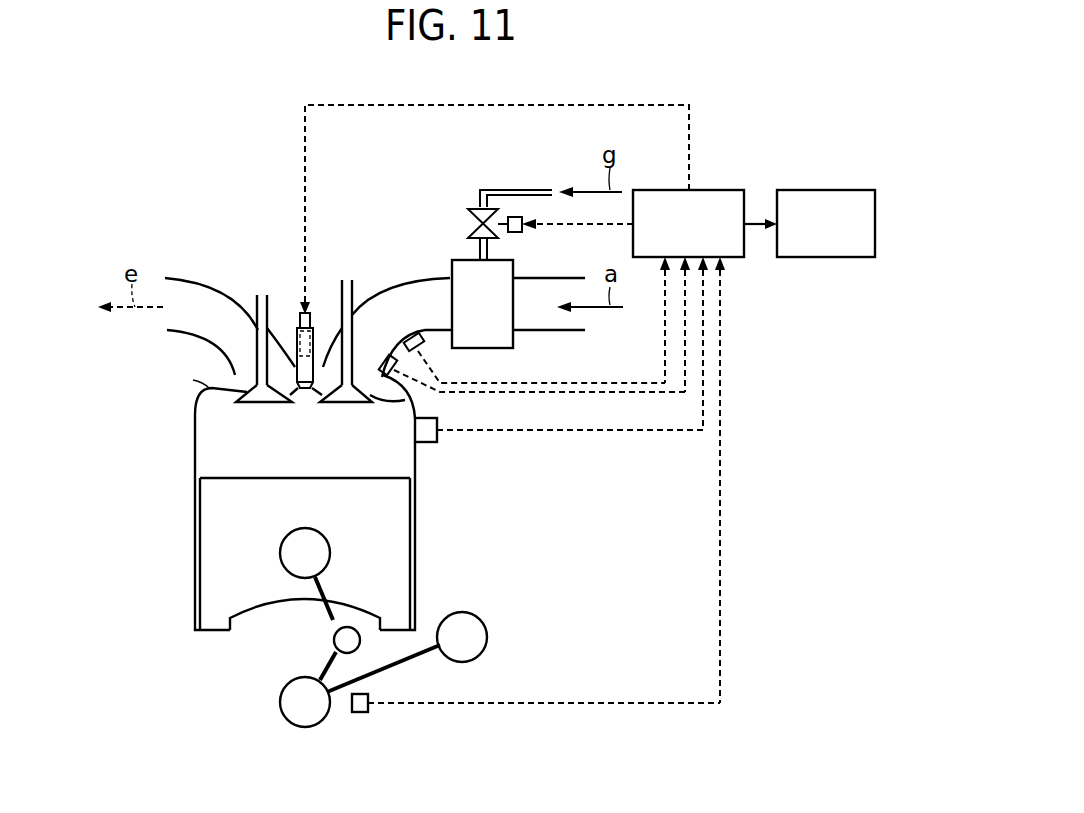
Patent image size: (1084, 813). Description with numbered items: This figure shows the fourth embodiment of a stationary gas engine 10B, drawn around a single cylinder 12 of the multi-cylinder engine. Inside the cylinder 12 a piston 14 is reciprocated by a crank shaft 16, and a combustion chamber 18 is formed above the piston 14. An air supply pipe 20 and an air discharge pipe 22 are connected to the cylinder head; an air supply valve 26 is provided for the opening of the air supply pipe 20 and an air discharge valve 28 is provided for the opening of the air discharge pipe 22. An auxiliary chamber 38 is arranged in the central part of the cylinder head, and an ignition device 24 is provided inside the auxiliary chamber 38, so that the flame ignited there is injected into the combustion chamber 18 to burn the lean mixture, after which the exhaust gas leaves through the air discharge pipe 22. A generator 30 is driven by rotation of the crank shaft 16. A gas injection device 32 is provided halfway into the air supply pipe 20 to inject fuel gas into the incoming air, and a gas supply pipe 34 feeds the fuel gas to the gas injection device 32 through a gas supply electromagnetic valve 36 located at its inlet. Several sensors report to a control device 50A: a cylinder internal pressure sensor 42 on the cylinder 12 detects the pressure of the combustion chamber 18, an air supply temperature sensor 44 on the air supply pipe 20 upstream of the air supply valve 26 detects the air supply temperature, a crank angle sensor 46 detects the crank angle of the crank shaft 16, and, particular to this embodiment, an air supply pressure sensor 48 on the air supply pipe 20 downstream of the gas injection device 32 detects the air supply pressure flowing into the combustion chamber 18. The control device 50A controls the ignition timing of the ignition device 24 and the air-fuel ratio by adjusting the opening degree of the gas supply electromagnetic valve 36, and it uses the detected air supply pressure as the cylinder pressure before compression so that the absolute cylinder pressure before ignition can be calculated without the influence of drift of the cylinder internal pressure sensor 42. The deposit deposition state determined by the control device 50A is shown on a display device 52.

The stationary gas engine 10B is at (655, 86).
The cylinder 12 is at (462, 513).
The piston 14 is at (210, 602).
The crank shaft 16 is at (308, 712).
The combustion chamber 18 is at (237, 438).
The air supply pipe 20 is at (549, 277).
The air discharge pipe 22 is at (181, 278).
The ignition device 24 is at (297, 334).
The air supply valve 26 is at (380, 403).
The air discharge valve 28 is at (187, 374).
The generator 30 is at (488, 634).
The gas injection device 32 is at (482, 334).
The gas supply pipe 34 is at (520, 189).
The gas supply electromagnetic valve 36 is at (478, 226).
The auxiliary chamber 38 is at (290, 325).
The cylinder internal pressure sensor 42 is at (437, 441).
The air supply temperature sensor 44 is at (383, 350).
The crank angle sensor 46 is at (370, 712).
The air supply pressure sensor 48 is at (414, 330).
The control device 50A is at (717, 190).
The display device 52 is at (850, 190).